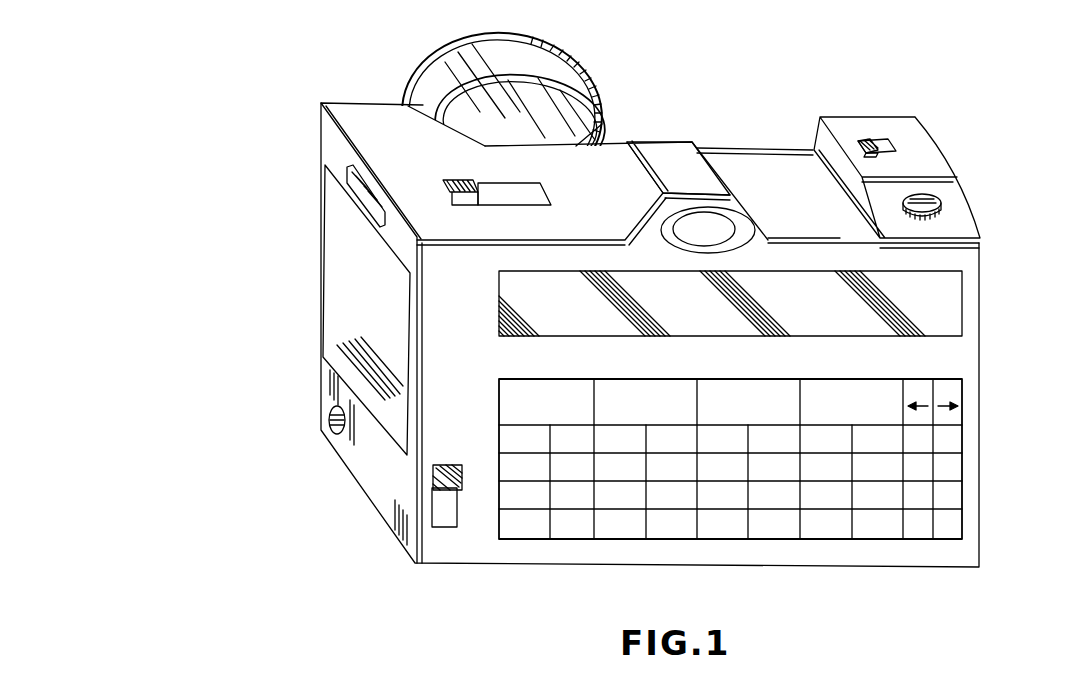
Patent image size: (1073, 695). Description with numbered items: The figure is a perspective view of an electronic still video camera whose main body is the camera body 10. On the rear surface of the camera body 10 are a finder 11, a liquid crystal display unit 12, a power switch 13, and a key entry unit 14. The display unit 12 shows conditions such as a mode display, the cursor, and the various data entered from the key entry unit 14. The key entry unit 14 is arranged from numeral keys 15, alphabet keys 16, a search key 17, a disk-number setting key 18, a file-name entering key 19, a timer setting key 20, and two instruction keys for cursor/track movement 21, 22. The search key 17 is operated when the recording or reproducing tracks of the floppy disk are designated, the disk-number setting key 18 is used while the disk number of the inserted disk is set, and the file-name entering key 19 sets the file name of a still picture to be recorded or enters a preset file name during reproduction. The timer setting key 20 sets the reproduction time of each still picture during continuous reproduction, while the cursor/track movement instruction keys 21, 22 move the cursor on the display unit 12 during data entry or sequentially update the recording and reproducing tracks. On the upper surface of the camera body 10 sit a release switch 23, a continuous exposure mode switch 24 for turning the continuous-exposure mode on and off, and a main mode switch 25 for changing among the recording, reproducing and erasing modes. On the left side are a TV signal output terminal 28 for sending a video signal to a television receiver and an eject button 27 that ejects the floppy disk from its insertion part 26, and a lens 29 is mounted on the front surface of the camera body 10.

The camera body 10 is at (1003, 262).
The finder 11 is at (720, 227).
The liquid crystal display unit 12 is at (947, 320).
The power switch 13 is at (443, 513).
The key entry unit 14 is at (963, 470).
The numeral keys 15 is at (958, 440).
The alphabet keys 16 is at (922, 494).
The search key 17 is at (540, 379).
The disk-number setting key 18 is at (626, 380).
The file-name entering key 19 is at (755, 379).
The timer setting key 20 is at (850, 380).
The cursor/track movement instruction key 21 is at (917, 379).
The cursor/track movement instruction key 22 is at (950, 379).
The release switch 23 is at (933, 203).
The continuous exposure mode switch 24 is at (903, 145).
The main mode switch 25 is at (492, 183).
The insertion part 26 is at (338, 249).
The eject button 27 is at (348, 176).
The TV signal output terminal 28 is at (331, 412).
The lens 29 is at (607, 141).